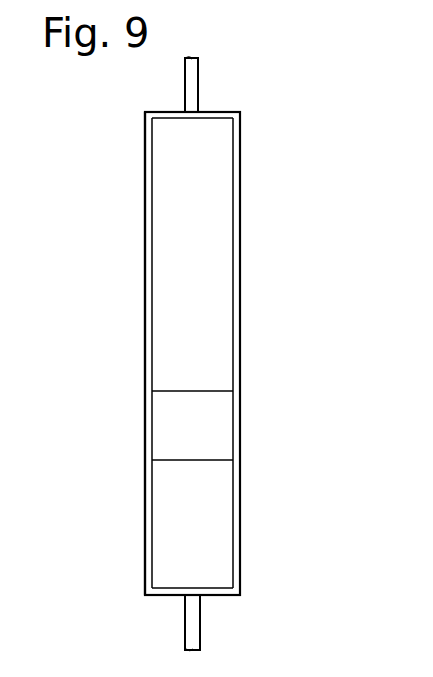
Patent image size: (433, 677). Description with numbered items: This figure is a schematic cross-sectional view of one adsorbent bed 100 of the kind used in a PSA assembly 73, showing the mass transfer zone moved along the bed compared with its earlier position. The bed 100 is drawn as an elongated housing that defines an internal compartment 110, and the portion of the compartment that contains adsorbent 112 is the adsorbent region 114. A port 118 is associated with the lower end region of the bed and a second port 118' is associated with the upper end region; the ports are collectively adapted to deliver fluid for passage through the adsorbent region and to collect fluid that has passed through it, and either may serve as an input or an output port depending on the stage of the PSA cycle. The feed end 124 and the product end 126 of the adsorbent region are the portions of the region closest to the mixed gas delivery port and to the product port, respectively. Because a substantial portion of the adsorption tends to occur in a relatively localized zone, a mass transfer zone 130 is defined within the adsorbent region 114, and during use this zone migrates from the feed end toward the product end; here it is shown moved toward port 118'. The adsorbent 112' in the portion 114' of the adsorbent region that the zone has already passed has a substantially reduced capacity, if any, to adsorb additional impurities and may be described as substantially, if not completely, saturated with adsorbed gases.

The PSA assembly 73 is at (75, 106).
The adsorbent bed 100 is at (92, 163).
The internal compartment 110 is at (136, 255).
The adsorbent region 114 is at (159, 353).
The adsorbent 112 is at (160, 391).
The mass transfer zone 130 is at (164, 436).
The portion of the adsorbent region 114' is at (135, 503).
The adsorbent 112' is at (135, 539).
The port 118 is at (157, 623).
The port 118' is at (156, 84).
The feed end 124 is at (217, 592).
The product end 126 is at (218, 117).